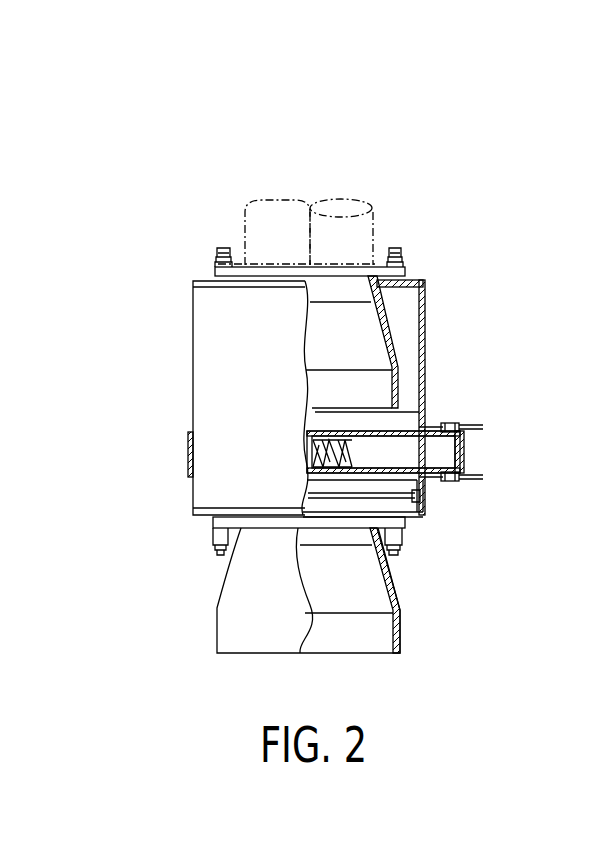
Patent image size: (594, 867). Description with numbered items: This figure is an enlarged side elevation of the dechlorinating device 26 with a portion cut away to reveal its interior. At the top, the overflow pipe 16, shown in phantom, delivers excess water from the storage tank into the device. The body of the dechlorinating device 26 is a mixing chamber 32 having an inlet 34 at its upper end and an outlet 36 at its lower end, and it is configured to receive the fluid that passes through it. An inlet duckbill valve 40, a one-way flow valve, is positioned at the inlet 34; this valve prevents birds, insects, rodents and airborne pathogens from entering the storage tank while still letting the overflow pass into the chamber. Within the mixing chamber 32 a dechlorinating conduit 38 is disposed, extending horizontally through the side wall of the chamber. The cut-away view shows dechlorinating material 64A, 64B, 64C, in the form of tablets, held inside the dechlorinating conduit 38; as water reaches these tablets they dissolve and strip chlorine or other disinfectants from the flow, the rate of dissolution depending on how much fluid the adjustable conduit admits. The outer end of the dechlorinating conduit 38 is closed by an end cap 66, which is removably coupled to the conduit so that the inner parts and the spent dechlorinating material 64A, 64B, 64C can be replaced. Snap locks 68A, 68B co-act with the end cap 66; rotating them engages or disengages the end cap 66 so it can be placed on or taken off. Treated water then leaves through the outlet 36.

The overflow pipe 16 is at (247, 217).
The dechlorinating device 26 is at (193, 338).
The mixing chamber 32 is at (425, 300).
The inlet 34 is at (362, 265).
The outlet 36 is at (350, 513).
The dechlorinating conduit 38 is at (437, 428).
The inlet duckbill valve 40 is at (388, 343).
The dechlorinating material 64A is at (313, 455).
The dechlorinating material 64B is at (363, 464).
The dechlorinating material 64C is at (306, 522).
The end cap 66 is at (467, 452).
The snap lock 68A is at (470, 424).
The snap lock 68B is at (472, 480).